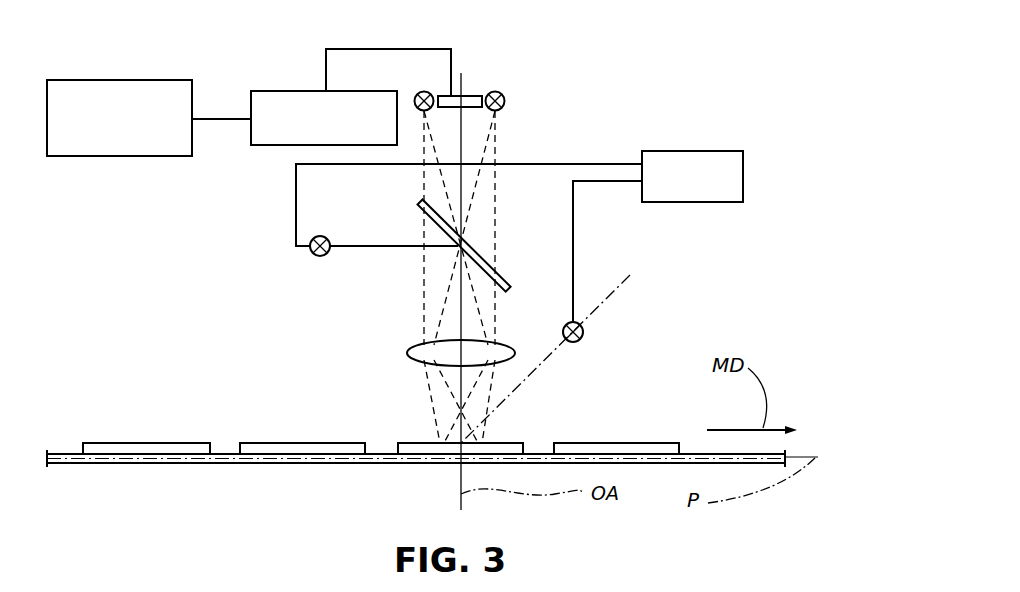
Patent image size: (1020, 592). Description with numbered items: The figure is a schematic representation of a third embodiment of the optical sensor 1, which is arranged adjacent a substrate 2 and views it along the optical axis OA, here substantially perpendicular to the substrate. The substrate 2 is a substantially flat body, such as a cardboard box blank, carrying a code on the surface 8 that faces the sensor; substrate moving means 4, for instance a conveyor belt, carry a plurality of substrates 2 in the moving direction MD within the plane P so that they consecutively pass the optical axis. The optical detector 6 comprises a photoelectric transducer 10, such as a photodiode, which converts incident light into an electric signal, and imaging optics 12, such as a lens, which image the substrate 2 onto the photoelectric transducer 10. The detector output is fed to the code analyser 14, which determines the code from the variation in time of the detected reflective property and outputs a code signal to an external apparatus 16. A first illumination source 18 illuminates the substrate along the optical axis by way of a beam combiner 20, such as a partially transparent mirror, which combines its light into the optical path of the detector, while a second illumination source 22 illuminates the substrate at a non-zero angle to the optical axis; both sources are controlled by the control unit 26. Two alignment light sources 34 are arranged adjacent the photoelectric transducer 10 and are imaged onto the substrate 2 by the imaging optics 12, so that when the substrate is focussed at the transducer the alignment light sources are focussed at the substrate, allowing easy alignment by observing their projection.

The optical sensor 1 is at (706, 30).
The substrate 2 is at (158, 451).
The substrate moving means 4 is at (218, 453).
The optical detector 6 is at (513, 76).
The surface 8 is at (408, 443).
The photoelectric transducer 10 is at (468, 96).
The imaging optics 12 is at (410, 350).
The code analyser 14 is at (265, 91).
The external apparatus 16 is at (177, 80).
The first illumination source 18 is at (311, 254).
The beam combiner 20 is at (420, 200).
The second illumination source 22 is at (583, 331).
The control unit 26 is at (743, 172).
The alignment light source 34 is at (418, 92).